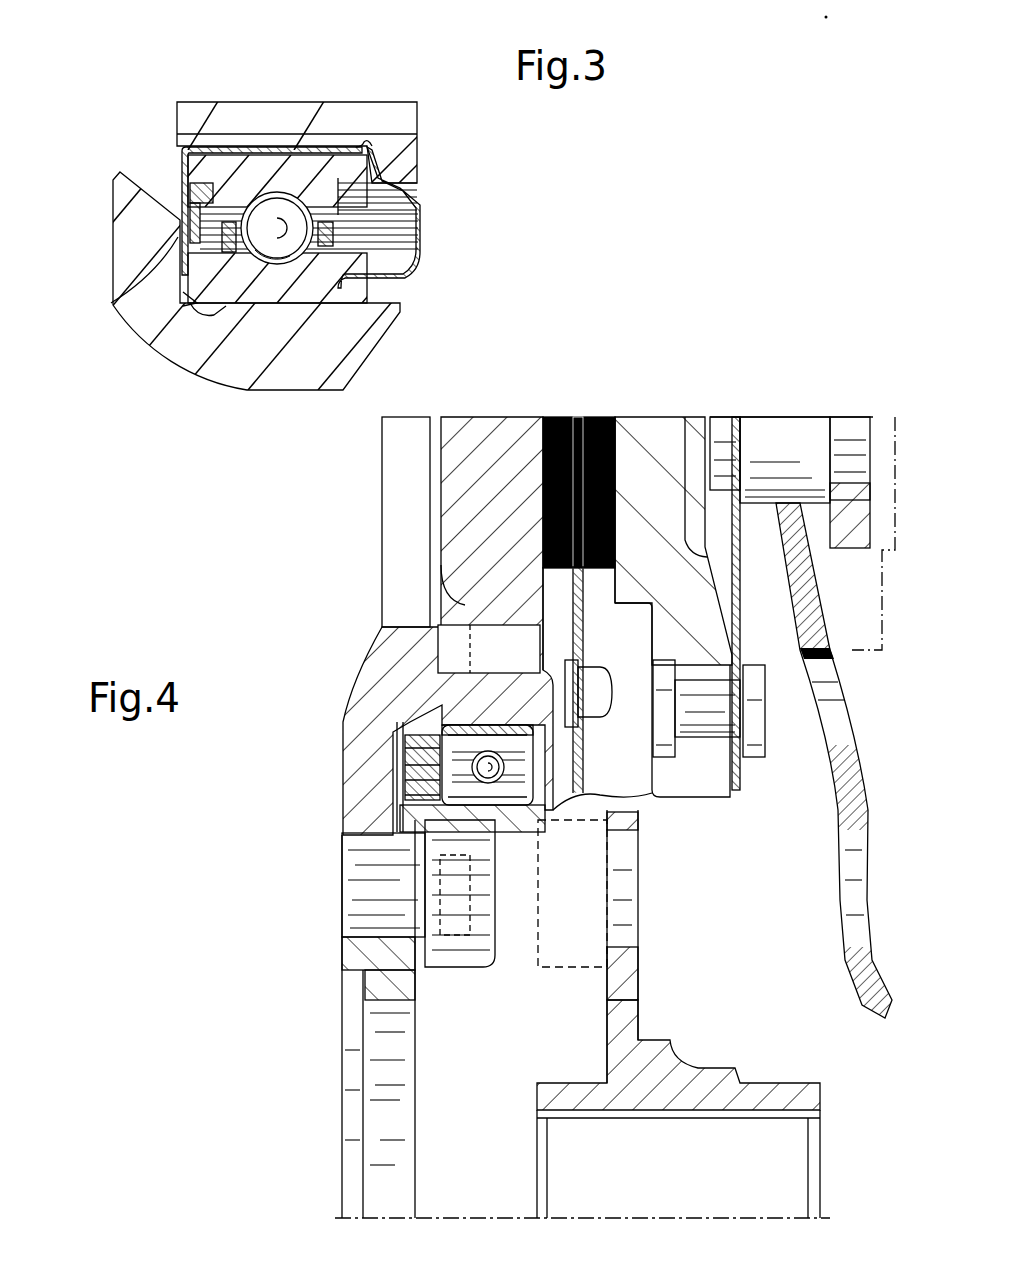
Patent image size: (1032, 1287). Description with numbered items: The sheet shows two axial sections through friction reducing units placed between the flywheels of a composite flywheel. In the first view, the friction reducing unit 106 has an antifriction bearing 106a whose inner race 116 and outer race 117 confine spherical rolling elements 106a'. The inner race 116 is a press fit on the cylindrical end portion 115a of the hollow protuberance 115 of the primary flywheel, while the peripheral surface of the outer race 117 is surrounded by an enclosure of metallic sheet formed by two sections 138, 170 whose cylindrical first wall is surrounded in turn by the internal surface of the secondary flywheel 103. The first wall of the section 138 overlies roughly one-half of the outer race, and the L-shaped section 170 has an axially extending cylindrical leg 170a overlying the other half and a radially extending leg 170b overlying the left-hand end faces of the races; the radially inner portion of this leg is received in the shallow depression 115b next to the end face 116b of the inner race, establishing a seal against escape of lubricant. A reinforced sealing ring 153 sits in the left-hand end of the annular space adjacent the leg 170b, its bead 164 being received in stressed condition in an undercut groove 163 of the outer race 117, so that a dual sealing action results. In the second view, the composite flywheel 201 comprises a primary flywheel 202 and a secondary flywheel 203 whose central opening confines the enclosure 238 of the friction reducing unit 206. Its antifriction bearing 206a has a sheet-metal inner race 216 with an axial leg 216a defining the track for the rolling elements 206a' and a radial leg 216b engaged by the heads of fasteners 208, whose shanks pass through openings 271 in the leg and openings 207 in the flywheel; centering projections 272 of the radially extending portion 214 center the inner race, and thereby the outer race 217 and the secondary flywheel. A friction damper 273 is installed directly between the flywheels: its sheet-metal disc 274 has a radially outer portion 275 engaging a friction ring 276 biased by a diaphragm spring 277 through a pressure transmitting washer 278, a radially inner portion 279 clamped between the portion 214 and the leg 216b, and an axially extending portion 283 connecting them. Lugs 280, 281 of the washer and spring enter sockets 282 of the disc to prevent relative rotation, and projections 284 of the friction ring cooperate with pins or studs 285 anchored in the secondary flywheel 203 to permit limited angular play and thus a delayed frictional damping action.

In FIG. 3, the secondary flywheel 103 is at (270, 113).
In FIG. 3, the friction reducing unit 106 is at (345, 87).
In FIG. 3, the antifriction bearing 106a is at (418, 217).
In FIG. 3, the spherical rolling elements 106a' is at (309, 160).
In FIG. 3, the hollow protuberance 115 is at (127, 278).
In FIG. 3, the cylindrical end portion 115a is at (283, 367).
In FIG. 3, the cutout or depression 115b is at (195, 300).
In FIG. 3, the inner race 116 is at (248, 292).
In FIG. 3, the end face 116b is at (187, 304).
In FIG. 3, the outer race 117 is at (345, 172).
In FIG. 3, the enclosure section 138 is at (350, 140).
In FIG. 3, the sealing ring 153 is at (183, 212).
In FIG. 3, the undercut groove 163 is at (210, 151).
In FIG. 3, the bead 164 is at (188, 190).
In FIG. 3, the enclosure section 170 is at (207, 146).
In FIG. 3, the cylindrical leg 170a is at (235, 146).
In FIG. 3, the radially extending leg 170b is at (187, 195).
In FIG. 4, the composite flywheel 201 is at (833, 412).
In FIG. 4, the primary flywheel 202 is at (400, 670).
In FIG. 4, the secondary flywheel 203 is at (530, 573).
In FIG. 4, the friction reducing unit 206 is at (574, 796).
In FIG. 4, the antifriction bearing 206a is at (791, 760).
In FIG. 4, the rolling elements 206a' is at (664, 845).
In FIG. 4, the openings 207 is at (365, 945).
In FIG. 4, the fasteners 208 is at (380, 905).
In FIG. 4, the radially extending portion 214 is at (395, 642).
In FIG. 4, the inner race 216 is at (455, 830).
In FIG. 4, the cylindrical leg 216a is at (540, 805).
In FIG. 4, the radially extending leg 216b is at (395, 817).
In FIG. 4, the outer race 217 is at (405, 730).
In FIG. 4, the enclosure 238 is at (489, 649).
In FIG. 4, the openings 271 is at (390, 955).
In FIG. 4, the centering projections 272 is at (372, 1020).
In FIG. 4, the damper 273 is at (357, 754).
In FIG. 4, the disc 274 is at (400, 858).
In FIG. 4, the radially outer portion 275 is at (395, 690).
In FIG. 4, the friction ring 276 is at (395, 761).
In FIG. 4, the diaphragm spring 277 is at (400, 750).
In FIG. 4, the pressure transmitting washer 278 is at (392, 757).
In FIG. 4, the radially inner portion 279 is at (360, 1005).
In FIG. 4, the projection 280 is at (397, 766).
In FIG. 4, the projection 281 is at (432, 822).
In FIG. 4, the sockets 282 is at (440, 850).
In FIG. 4, the axially extending portion 283 is at (517, 830).
In FIG. 4, the projections 284 is at (445, 630).
In FIG. 4, the projections 285 is at (525, 655).